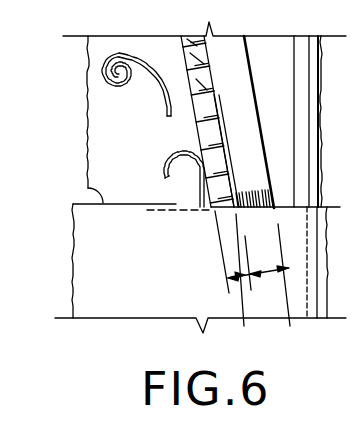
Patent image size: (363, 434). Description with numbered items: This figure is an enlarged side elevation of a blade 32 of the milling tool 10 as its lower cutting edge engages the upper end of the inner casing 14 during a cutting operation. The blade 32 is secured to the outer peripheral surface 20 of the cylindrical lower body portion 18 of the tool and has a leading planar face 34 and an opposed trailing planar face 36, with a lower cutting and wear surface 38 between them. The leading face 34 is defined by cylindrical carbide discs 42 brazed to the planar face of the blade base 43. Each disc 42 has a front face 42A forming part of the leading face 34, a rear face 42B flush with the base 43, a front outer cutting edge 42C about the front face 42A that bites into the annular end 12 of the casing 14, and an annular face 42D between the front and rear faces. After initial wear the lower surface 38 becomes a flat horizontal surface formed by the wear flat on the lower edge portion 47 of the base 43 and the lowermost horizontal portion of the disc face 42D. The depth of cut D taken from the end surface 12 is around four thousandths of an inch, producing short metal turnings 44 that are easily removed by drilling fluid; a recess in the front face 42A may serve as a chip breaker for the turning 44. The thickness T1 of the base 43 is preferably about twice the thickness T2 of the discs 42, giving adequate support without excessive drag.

The milling tool 10 is at (103, 45).
The annular end of inner casing 12 is at (88, 189).
The inner casing 14 is at (85, 260).
The lower body portion 18 is at (127, 105).
The outer peripheral surface 20 is at (284, 83).
The blade 32 is at (191, 104).
The leading face 34 is at (199, 137).
The trailing face 36 is at (262, 90).
The lower cutting and wear surface 38 is at (253, 211).
The carbide disc 42 is at (185, 50).
The front face of disc 42A is at (197, 115).
The rear face of disc 42B is at (210, 90).
The front outer cutting edge 42C is at (211, 211).
The annular face of disc 42D is at (229, 212).
The blade base 43 is at (242, 130).
The metal turning 44 is at (101, 72).
The lower edge portion of blade 47 is at (262, 209).
The depth of cut D is at (153, 180).
The thickness of blade base T1 is at (277, 286).
The thickness of disc T2 is at (252, 280).